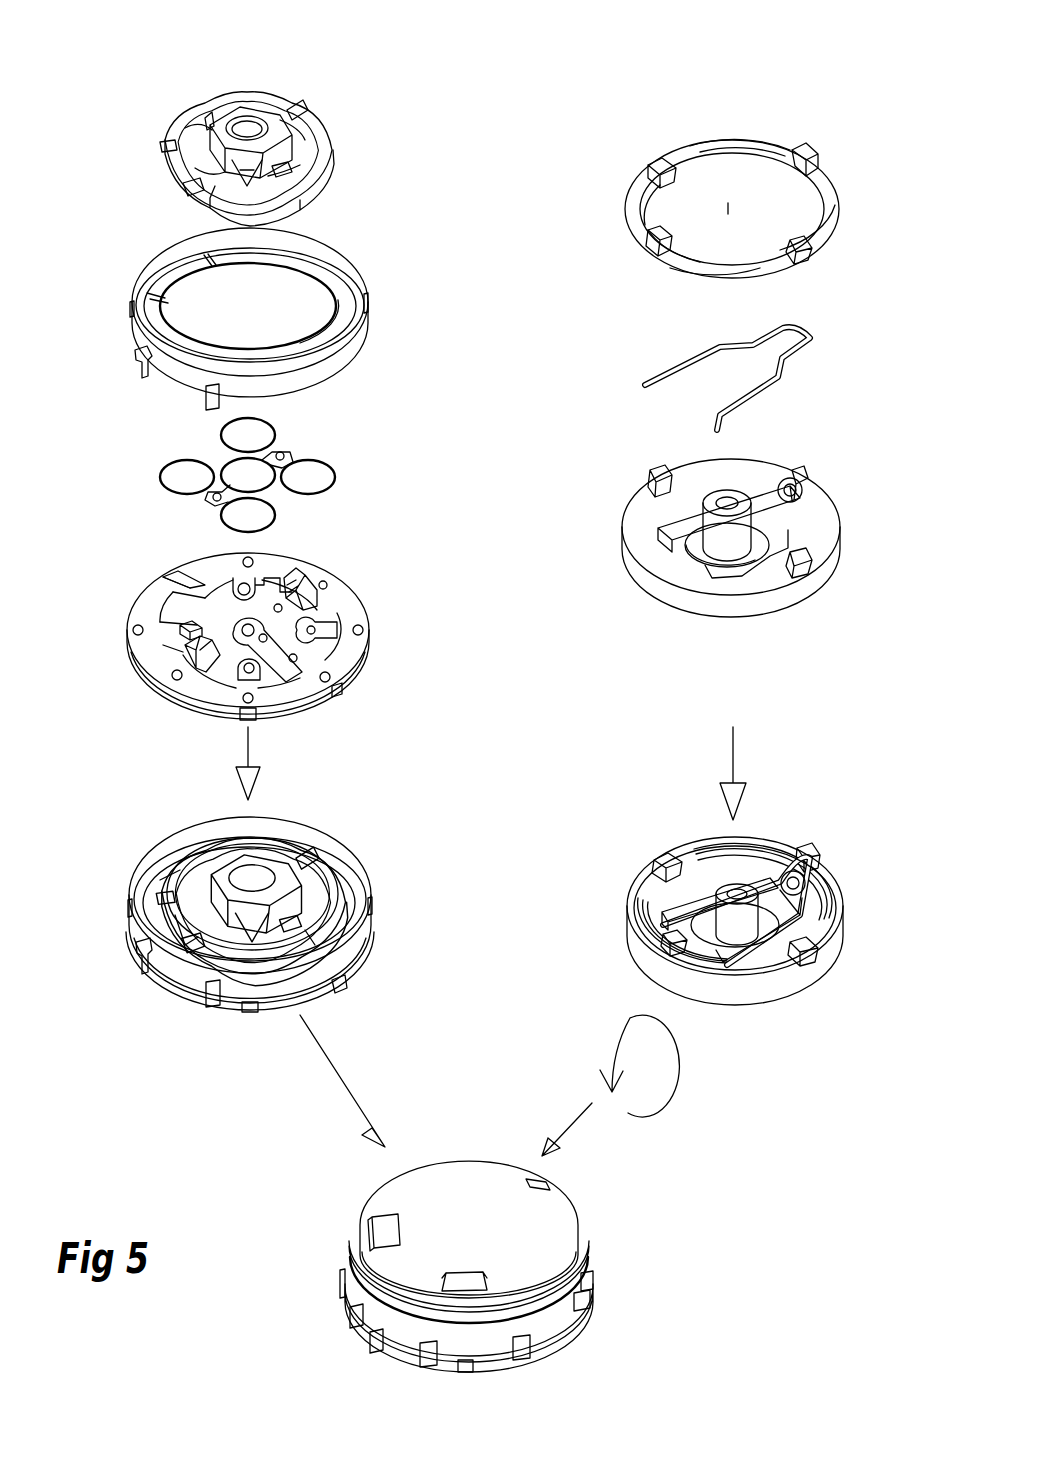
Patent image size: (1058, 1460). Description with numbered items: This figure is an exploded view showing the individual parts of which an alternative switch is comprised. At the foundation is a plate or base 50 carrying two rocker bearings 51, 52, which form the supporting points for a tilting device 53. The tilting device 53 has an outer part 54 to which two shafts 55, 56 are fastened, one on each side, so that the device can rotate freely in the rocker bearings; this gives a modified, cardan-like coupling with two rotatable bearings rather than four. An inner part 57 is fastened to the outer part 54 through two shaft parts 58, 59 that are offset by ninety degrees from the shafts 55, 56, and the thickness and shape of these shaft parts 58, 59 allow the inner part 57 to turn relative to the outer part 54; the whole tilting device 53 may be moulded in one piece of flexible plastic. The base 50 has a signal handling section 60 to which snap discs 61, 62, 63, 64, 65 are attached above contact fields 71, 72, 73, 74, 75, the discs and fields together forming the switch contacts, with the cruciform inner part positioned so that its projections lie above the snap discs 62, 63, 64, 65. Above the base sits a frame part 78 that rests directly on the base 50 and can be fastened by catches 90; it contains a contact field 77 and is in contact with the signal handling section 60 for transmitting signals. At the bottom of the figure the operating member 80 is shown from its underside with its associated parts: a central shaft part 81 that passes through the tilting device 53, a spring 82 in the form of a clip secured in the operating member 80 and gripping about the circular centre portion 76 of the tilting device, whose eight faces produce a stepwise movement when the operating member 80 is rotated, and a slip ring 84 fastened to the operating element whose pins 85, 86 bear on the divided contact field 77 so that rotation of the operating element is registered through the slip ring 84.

The base 50 is at (365, 942).
The rocker bearing 51 is at (207, 655).
The rocker bearing 52 is at (320, 583).
The tilting device 53 is at (276, 120).
The outer part 54 is at (167, 147).
The shaft 55 is at (190, 189).
The shaft 56 is at (298, 112).
The inner part 57 is at (247, 124).
The shaft part 58 is at (206, 124).
The shaft part 59 is at (282, 173).
The signal handling section 60 is at (195, 602).
The snap disc 61 is at (259, 456).
The snap disc 62 is at (188, 477).
The snap disc 63 is at (255, 432).
The snap disc 64 is at (312, 475).
The snap disc 65 is at (250, 514).
The contact field 71 is at (242, 636).
The contact field 72 is at (180, 632).
The contact field 73 is at (243, 588).
The contact field 74 is at (311, 632).
The contact field 75 is at (258, 664).
The centre portion 76 is at (298, 885).
The contact field 77 is at (153, 300).
The frame part 78 is at (323, 780).
The operating member 80 is at (643, 878).
The central shaft part 81 is at (740, 526).
The spring 82 is at (702, 355).
The slip ring 84 is at (722, 562).
The pin 85 is at (628, 236).
The pin 86 is at (800, 150).
The catch 90 is at (368, 303).